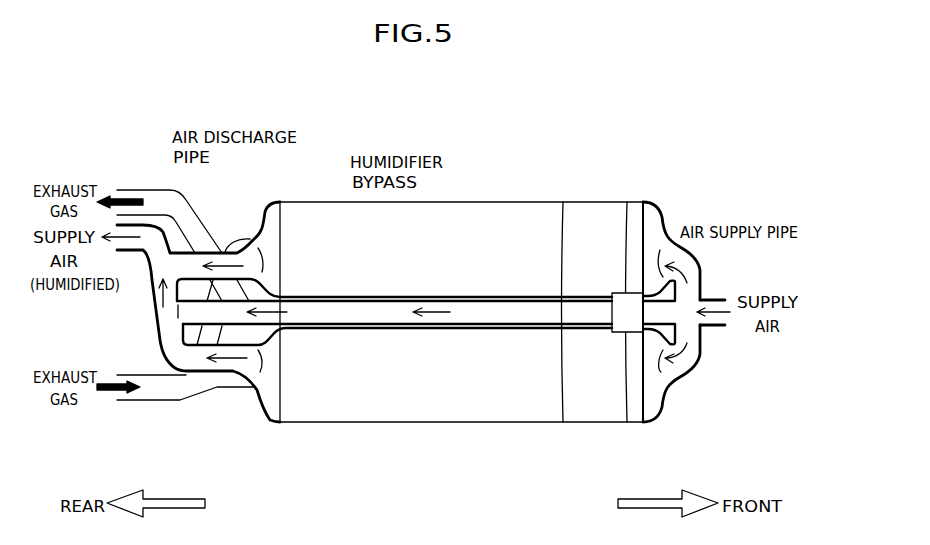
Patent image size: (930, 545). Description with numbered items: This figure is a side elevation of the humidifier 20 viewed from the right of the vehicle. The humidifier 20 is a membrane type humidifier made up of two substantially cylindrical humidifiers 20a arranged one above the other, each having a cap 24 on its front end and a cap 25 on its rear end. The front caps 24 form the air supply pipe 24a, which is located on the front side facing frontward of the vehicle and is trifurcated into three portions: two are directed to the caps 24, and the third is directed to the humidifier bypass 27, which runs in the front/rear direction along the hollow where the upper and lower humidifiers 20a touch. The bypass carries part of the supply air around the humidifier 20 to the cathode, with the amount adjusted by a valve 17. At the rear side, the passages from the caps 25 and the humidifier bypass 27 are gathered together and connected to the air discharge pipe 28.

The humidifier 20 is at (608, 158).
The humidifier 20a is at (485, 202).
The valve 17 is at (620, 311).
The cap 24 is at (661, 223).
The air supply pipe 24a is at (717, 297).
The cap 25 is at (267, 201).
The humidifier bypass 27 is at (323, 317).
The air discharge pipe 28 is at (155, 232).